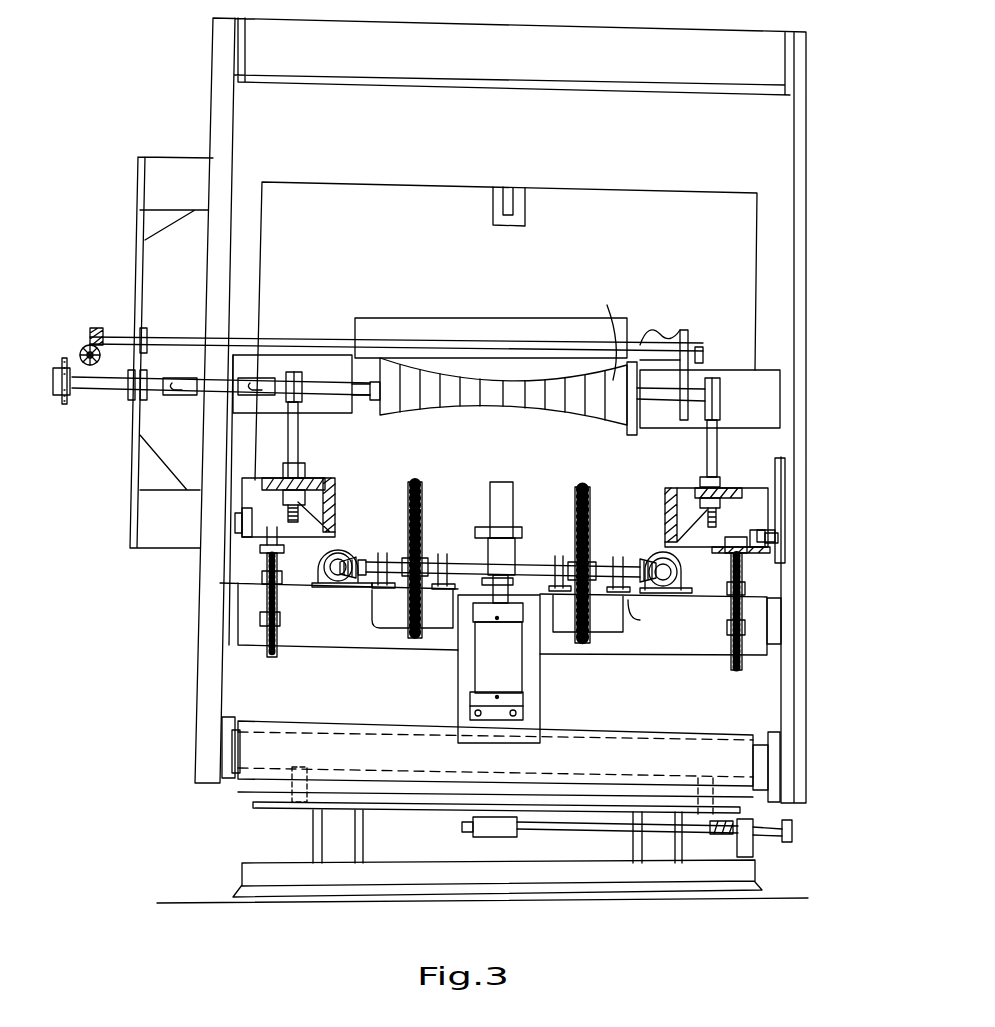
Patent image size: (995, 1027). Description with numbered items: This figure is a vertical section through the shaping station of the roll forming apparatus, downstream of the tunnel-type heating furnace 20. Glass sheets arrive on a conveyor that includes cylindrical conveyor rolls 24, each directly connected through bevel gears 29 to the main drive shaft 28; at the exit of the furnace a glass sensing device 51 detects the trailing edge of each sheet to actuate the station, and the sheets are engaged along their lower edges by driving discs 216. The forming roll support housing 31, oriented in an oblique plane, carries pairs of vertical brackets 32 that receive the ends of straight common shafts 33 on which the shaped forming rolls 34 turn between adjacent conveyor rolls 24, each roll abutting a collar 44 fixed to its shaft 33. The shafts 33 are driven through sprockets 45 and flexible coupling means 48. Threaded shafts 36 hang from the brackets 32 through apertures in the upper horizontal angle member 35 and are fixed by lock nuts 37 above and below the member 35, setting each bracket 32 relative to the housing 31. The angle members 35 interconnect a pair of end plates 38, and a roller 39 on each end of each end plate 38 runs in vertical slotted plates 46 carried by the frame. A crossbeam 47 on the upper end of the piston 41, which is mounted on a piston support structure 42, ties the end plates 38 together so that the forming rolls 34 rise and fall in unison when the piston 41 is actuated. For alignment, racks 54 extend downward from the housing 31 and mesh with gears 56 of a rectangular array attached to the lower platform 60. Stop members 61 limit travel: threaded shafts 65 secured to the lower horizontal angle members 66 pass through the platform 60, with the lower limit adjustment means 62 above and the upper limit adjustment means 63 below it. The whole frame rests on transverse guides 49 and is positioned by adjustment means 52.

The tunnel-type heating furnace 20 is at (490, 276).
The conveyor roll 24 is at (470, 342).
The main drive shaft 28 is at (84, 350).
The bevel gears 29 is at (98, 331).
The forming roll support housing 31 is at (733, 483).
The vertical brackets 32 is at (290, 402).
The common shafts 33 is at (353, 398).
The shaped forming rolls 34 is at (500, 402).
The upper horizontal angle member 35 is at (340, 525).
The threaded shafts 36 is at (301, 454).
The lock nuts 37 is at (308, 480).
The end plates 38 is at (462, 524).
The roller 39 is at (245, 507).
The piston 41 is at (468, 672).
The piston support structure 42 is at (562, 657).
The collar 44 is at (491, 333).
The sprockets 45 is at (72, 400).
The vertical slotted plates 46 is at (790, 470).
The crossbeam 47 is at (517, 560).
The flexible coupling means 48 is at (270, 378).
The transverse guides 49 is at (300, 805).
The glass sensing device 51 is at (515, 197).
The adjustment means 52 is at (780, 832).
The racks 54 is at (416, 480).
The gears 56 is at (592, 545).
The lower platform 60 is at (650, 660).
The stop members 61 is at (262, 557).
The lower limit adjustment means 62 is at (770, 597).
The upper limit adjustment means 63 is at (288, 618).
The threaded shafts 65 is at (268, 645).
The lower horizontal angle members 66 is at (722, 558).
The driving discs 216 is at (645, 333).